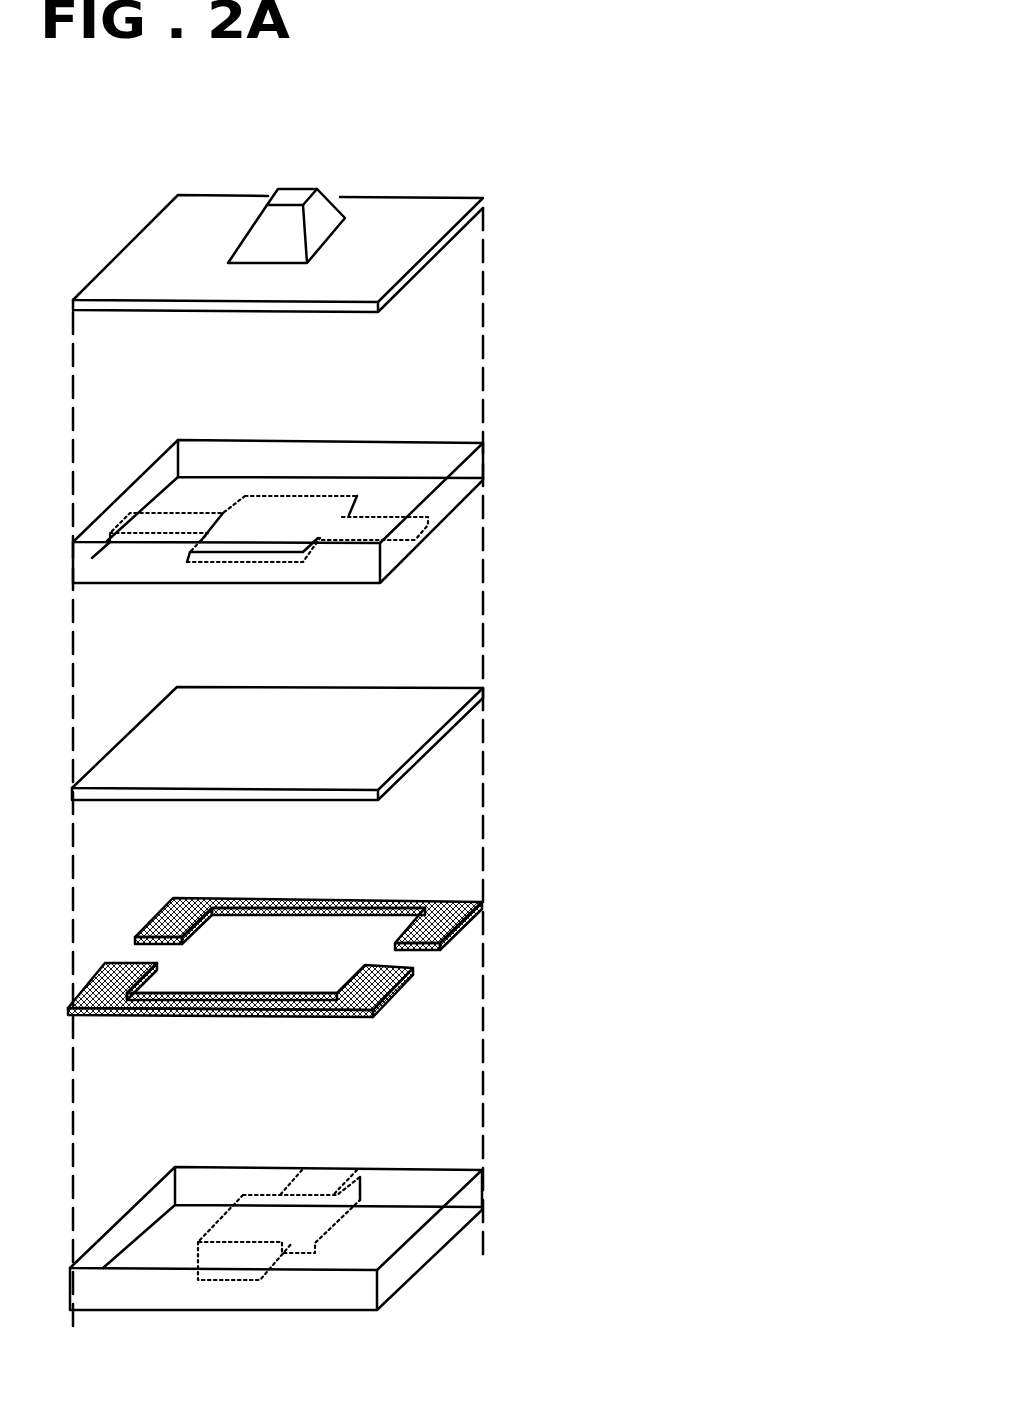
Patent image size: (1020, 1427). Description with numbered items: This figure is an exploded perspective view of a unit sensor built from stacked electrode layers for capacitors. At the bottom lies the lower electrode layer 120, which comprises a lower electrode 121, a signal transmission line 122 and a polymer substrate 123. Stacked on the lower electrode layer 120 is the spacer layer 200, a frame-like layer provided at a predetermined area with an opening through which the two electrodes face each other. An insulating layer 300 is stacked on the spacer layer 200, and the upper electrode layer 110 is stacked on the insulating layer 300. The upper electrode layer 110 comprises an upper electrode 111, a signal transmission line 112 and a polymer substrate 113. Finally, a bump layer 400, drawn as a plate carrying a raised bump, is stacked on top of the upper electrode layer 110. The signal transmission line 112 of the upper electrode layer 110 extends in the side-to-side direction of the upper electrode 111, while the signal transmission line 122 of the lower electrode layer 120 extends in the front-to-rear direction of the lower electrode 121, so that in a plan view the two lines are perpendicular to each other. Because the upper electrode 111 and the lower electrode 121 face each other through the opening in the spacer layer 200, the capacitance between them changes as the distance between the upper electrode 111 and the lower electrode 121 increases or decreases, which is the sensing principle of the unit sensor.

The bump layer 400 is at (385, 215).
The upper electrode layer 110 is at (484, 458).
The upper electrode 111 is at (285, 522).
The signal transmission line 112 is at (390, 515).
The polymer substrate 113 is at (447, 448).
The insulating layer 300 is at (453, 688).
The spacer layer 200 is at (453, 900).
The lower electrode layer 120 is at (482, 1185).
The lower electrode 121 is at (263, 1223).
The signal transmission line 122 is at (337, 1180).
The polymer substrate 123 is at (447, 1173).